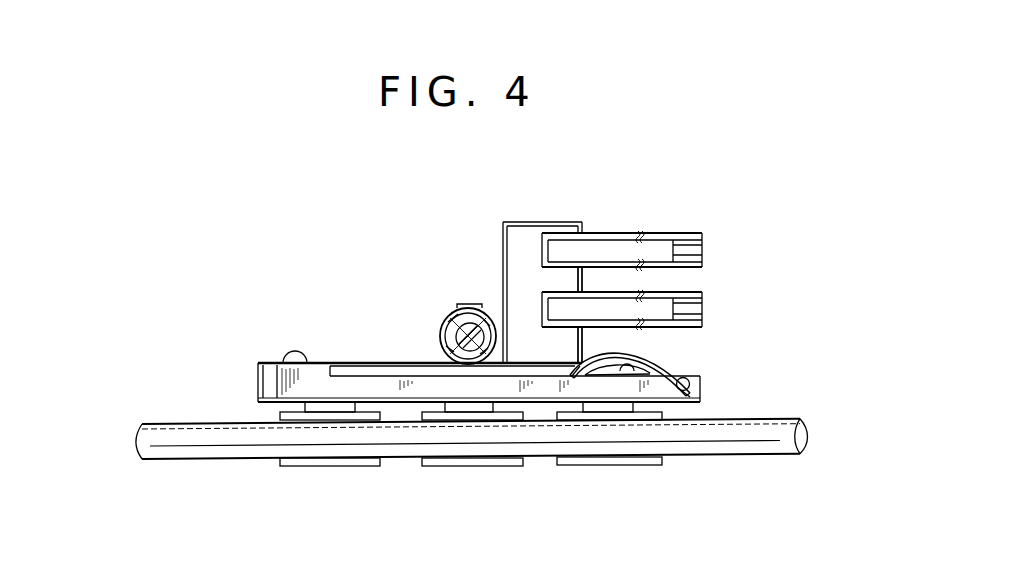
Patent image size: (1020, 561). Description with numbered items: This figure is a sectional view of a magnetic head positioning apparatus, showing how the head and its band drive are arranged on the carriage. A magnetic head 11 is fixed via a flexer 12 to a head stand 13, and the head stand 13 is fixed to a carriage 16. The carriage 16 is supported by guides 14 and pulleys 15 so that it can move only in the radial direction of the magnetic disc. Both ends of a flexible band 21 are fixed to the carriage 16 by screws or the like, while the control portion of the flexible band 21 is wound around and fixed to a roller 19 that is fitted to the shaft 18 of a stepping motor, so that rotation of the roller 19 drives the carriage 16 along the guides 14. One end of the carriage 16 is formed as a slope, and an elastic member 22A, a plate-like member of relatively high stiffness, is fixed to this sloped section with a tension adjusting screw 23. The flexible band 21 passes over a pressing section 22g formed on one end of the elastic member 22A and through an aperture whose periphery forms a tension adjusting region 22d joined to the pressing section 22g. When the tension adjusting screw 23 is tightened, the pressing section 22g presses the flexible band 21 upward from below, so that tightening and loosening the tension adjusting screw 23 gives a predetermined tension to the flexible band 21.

The magnetic head 11 is at (704, 245).
The flexer 12 is at (603, 233).
The head stand 13 is at (514, 253).
The guides 14 is at (205, 423).
The pulleys 15 is at (355, 467).
The carriage 16 is at (258, 384).
The shaft 18 is at (462, 338).
The roller 19 is at (452, 318).
The flexible band 21 is at (350, 362).
The pressing section 22g is at (588, 365).
The tension adjusting region 22d is at (660, 366).
The elastic member 22A is at (678, 381).
The tension adjusting screw 23 is at (690, 388).